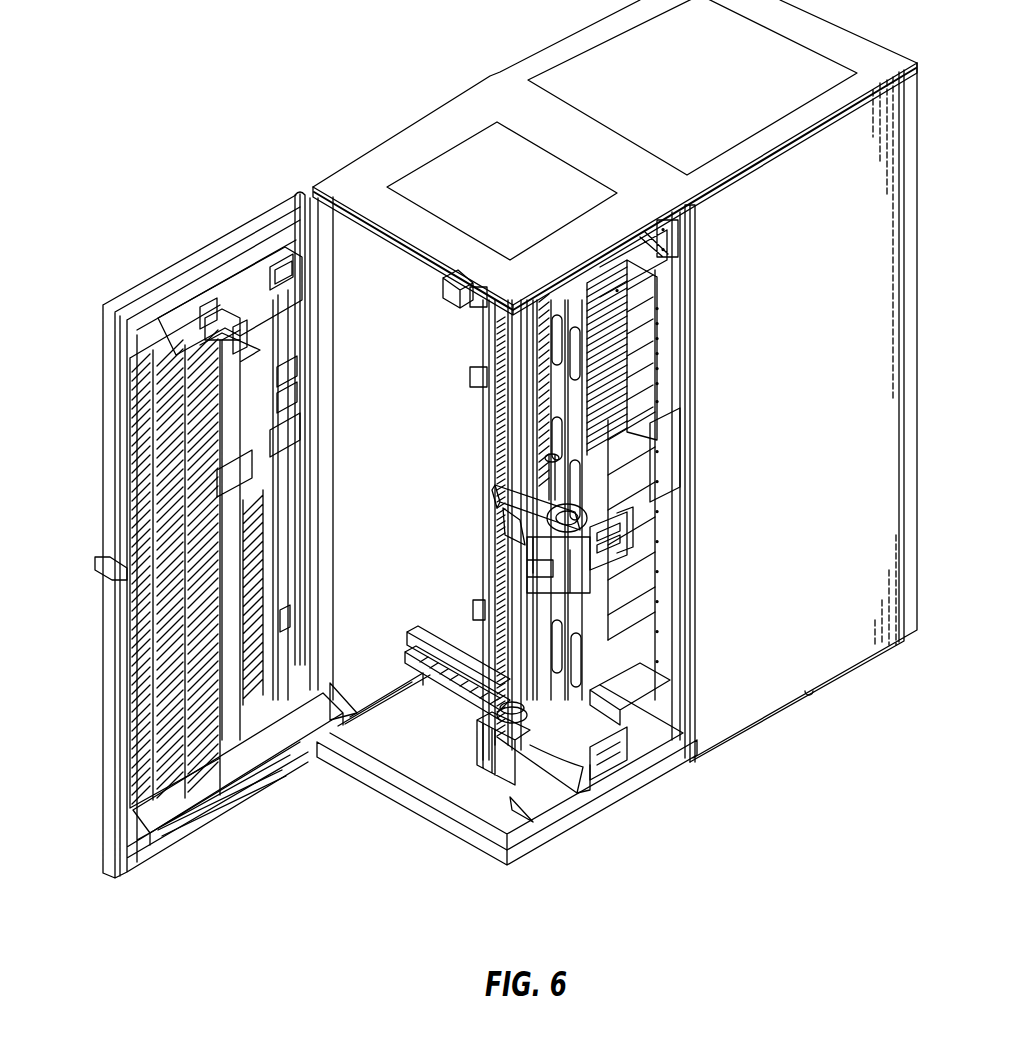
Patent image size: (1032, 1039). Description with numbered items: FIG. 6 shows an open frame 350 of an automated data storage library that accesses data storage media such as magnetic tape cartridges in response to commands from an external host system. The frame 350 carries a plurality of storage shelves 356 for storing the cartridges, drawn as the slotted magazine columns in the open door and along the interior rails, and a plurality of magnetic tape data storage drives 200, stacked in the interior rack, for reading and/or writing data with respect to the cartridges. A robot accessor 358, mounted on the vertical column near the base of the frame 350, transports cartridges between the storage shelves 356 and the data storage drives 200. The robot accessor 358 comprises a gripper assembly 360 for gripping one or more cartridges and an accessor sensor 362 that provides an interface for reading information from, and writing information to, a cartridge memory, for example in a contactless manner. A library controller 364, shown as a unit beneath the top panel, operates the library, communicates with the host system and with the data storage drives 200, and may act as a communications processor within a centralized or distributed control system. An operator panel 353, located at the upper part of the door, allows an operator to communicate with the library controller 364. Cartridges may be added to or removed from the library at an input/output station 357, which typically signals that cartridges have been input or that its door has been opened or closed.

The magnetic tape data storage drive 200 is at (640, 302).
The frame 350 is at (410, 865).
The operator panel 353 is at (289, 312).
The storage shelf 356 is at (130, 672).
The input/output station 357 is at (214, 460).
The robot accessor 358 is at (563, 758).
The gripper assembly 360 is at (637, 537).
The accessor sensor 362 is at (535, 565).
The library controller 364 is at (456, 300).